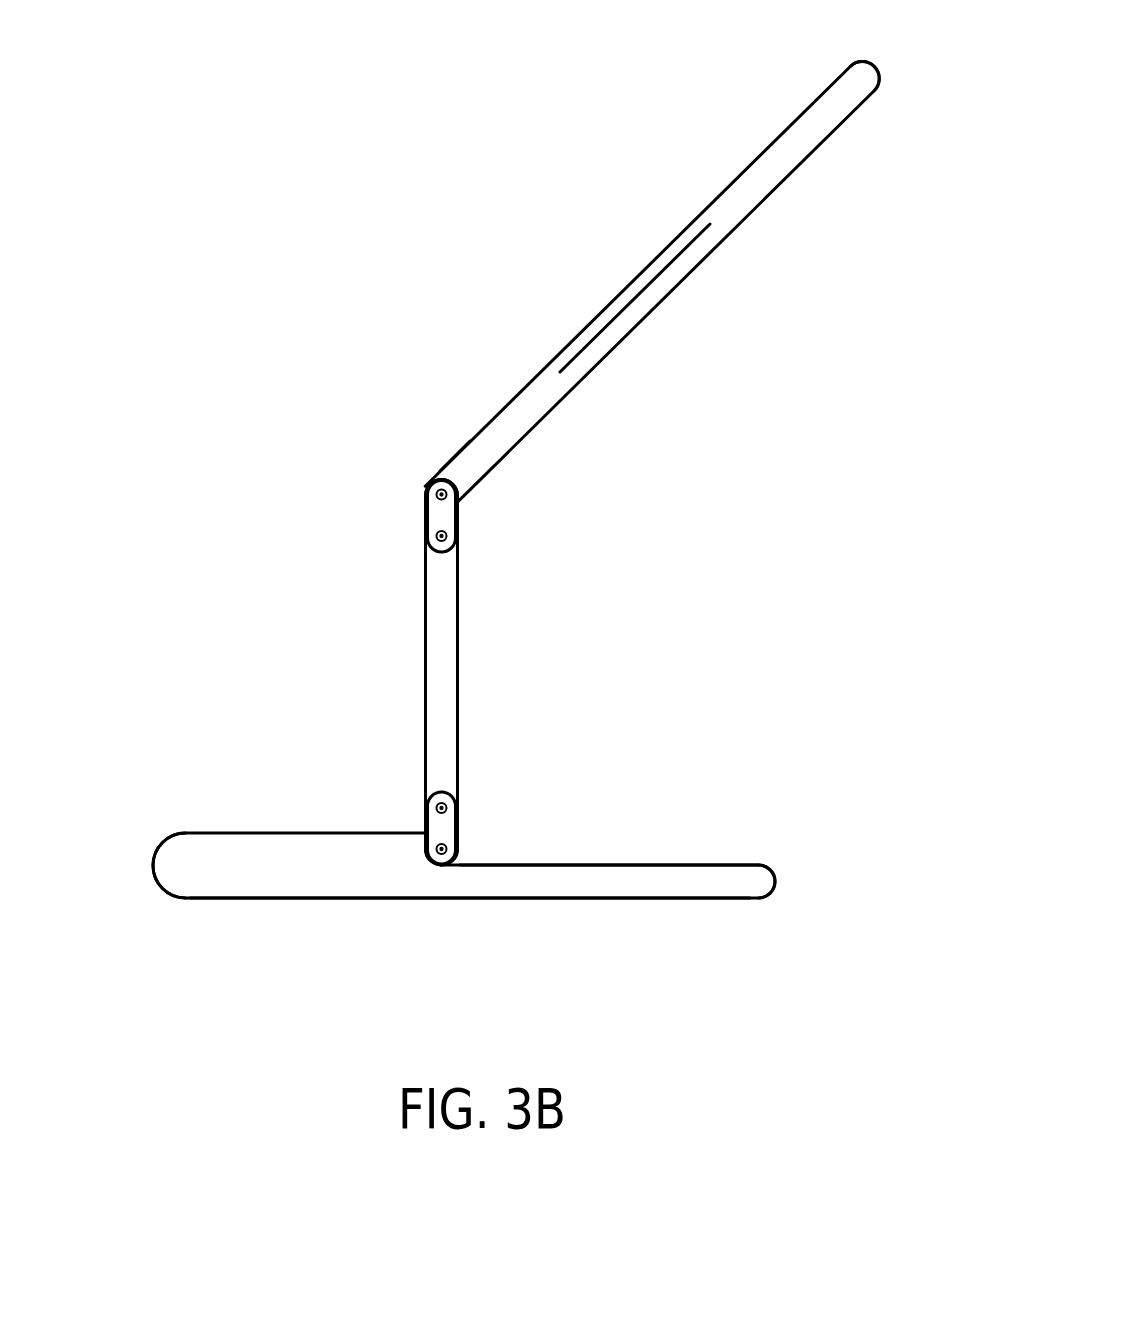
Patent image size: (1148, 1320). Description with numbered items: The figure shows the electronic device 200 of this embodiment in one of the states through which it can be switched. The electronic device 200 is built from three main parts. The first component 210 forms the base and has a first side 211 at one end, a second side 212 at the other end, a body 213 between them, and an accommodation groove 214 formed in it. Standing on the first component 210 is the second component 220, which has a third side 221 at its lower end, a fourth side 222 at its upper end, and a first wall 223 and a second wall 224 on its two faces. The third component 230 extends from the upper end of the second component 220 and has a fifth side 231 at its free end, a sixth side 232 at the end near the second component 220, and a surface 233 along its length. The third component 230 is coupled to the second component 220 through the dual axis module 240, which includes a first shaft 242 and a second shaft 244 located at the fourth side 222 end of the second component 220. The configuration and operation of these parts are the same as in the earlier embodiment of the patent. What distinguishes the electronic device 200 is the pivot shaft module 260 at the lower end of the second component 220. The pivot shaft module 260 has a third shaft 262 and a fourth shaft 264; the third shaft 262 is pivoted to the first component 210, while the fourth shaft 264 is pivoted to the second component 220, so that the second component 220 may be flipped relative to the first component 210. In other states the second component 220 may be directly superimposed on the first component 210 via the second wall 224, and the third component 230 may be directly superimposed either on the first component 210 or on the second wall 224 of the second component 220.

The electronic device 200 is at (406, 155).
The first component 210 is at (473, 886).
The first side 211 is at (188, 936).
The second side 212 is at (772, 931).
The body 213 is at (310, 890).
The accommodation groove 214 is at (649, 864).
The second component 220 is at (471, 673).
The third side 221 is at (491, 805).
The fourth side 222 is at (492, 572).
The first wall 223 is at (480, 636).
The second wall 224 is at (414, 644).
The third component 230 is at (616, 258).
The fifth side 231 is at (798, 49).
The sixth side 232 is at (423, 422).
The surface 233 is at (623, 256).
The dual axis module 240 is at (371, 505).
The first shaft 242 is at (441, 494).
The second shaft 244 is at (441, 535).
The pivot shaft module 260 is at (371, 794).
The third shaft 262 is at (441, 847).
The fourth shaft 264 is at (441, 806).